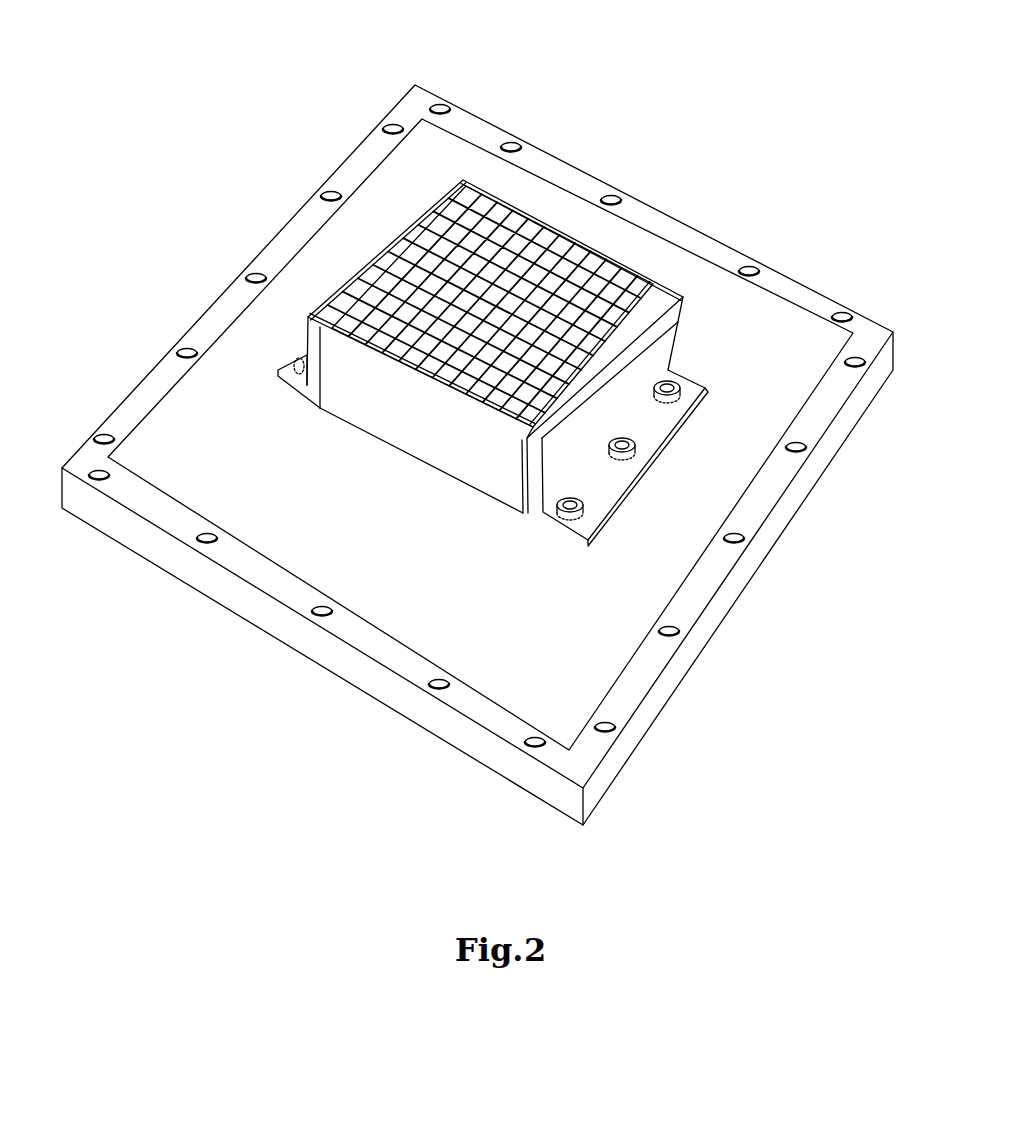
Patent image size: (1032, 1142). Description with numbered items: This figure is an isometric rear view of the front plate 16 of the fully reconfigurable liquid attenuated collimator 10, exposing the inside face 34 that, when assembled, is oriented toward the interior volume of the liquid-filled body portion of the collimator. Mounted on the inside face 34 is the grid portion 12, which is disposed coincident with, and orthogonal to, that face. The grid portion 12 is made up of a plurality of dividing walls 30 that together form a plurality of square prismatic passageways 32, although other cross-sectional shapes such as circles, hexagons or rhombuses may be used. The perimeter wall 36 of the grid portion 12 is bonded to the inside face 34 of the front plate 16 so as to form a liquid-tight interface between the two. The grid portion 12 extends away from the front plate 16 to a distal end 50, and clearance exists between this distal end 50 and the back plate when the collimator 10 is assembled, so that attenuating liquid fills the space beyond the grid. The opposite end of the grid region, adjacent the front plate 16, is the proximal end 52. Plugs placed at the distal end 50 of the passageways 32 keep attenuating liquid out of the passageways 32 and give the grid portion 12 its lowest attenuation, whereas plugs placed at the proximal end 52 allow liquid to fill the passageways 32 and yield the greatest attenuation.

The fully reconfigurable liquid attenuated collimator 10 is at (273, 96).
The grid portion 12 is at (546, 438).
The front plate 16 is at (167, 556).
The dividing walls 30 is at (490, 222).
The square prismatic passageways 32 is at (467, 192).
The inside face of the front plate 34 is at (191, 429).
The perimeter wall 36 is at (560, 443).
The distal end 50 is at (651, 307).
The proximal end 52 is at (523, 518).